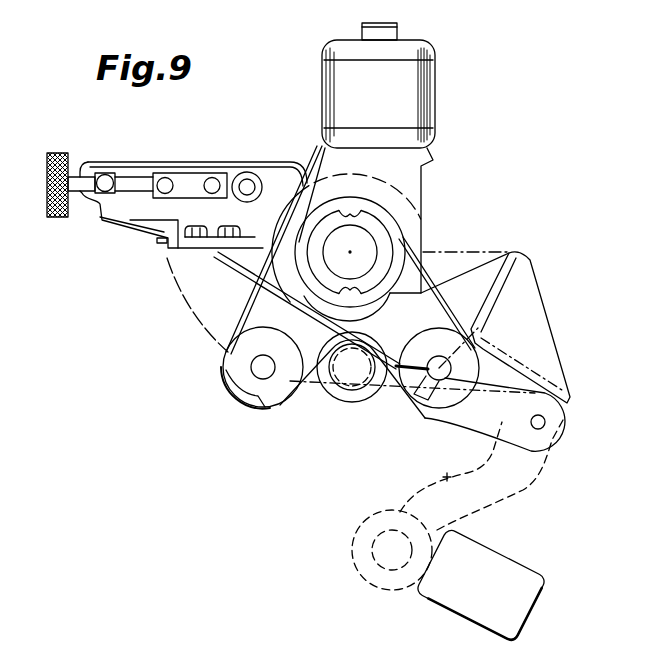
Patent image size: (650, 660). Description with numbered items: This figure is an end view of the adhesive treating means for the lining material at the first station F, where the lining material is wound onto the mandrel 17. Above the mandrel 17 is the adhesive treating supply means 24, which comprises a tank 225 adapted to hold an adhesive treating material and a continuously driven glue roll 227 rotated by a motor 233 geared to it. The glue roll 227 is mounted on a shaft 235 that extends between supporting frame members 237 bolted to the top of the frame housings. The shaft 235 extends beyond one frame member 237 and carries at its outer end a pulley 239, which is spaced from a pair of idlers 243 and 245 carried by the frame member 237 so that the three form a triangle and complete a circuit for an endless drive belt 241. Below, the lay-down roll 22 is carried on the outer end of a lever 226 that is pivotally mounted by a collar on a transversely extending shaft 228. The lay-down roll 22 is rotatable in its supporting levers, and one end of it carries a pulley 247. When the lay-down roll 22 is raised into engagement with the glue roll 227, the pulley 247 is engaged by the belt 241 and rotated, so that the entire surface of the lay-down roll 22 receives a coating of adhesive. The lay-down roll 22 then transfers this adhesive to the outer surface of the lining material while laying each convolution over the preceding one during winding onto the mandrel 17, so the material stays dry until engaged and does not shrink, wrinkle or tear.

The motor 233 is at (428, 98).
The tank 225 is at (164, 162).
The continuously driven roll 227 is at (303, 183).
The shaft 235 is at (367, 245).
The pulley 239 is at (407, 243).
The endless drive belt 241 is at (477, 258).
The supporting frame member 237 is at (524, 262).
The adhesive treating supply means 24 is at (290, 304).
The idler 243 is at (278, 408).
The lay-down roll 22 is at (326, 404).
The pulley 247 is at (363, 390).
The idler 245 is at (457, 413).
The lever 226 is at (462, 427).
The shaft 228 is at (546, 422).
The mandrel 17 is at (500, 562).
The first station F is at (453, 603).